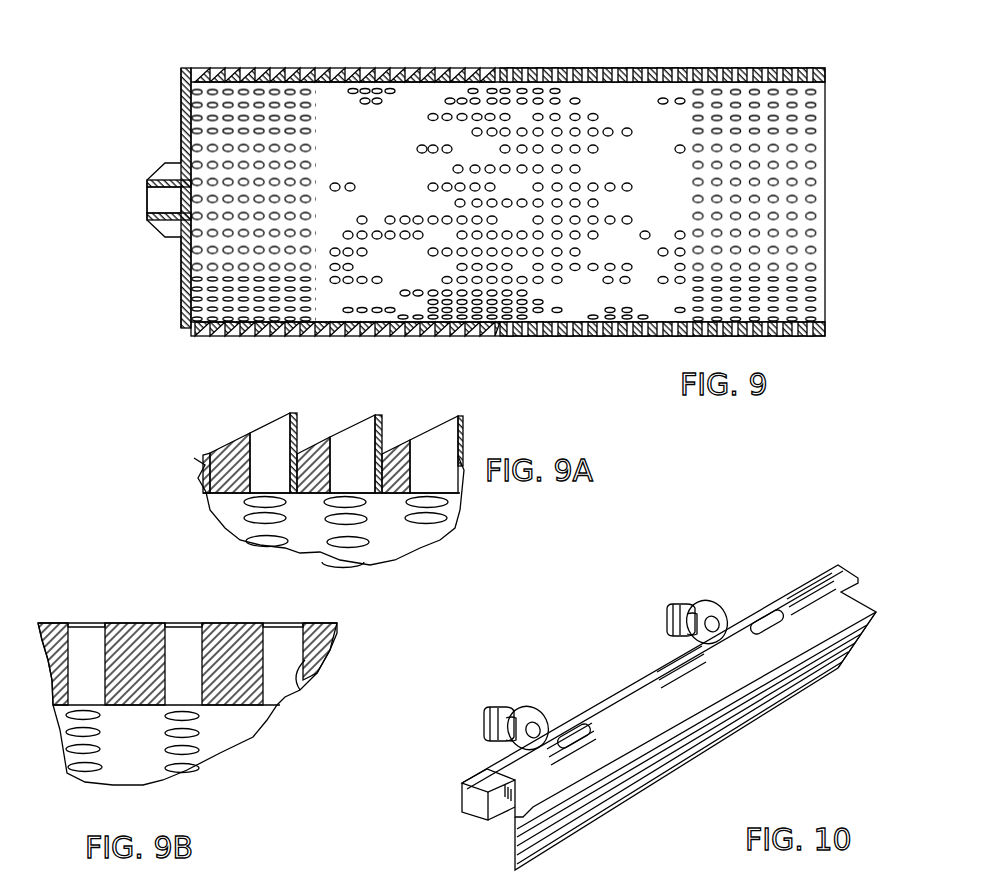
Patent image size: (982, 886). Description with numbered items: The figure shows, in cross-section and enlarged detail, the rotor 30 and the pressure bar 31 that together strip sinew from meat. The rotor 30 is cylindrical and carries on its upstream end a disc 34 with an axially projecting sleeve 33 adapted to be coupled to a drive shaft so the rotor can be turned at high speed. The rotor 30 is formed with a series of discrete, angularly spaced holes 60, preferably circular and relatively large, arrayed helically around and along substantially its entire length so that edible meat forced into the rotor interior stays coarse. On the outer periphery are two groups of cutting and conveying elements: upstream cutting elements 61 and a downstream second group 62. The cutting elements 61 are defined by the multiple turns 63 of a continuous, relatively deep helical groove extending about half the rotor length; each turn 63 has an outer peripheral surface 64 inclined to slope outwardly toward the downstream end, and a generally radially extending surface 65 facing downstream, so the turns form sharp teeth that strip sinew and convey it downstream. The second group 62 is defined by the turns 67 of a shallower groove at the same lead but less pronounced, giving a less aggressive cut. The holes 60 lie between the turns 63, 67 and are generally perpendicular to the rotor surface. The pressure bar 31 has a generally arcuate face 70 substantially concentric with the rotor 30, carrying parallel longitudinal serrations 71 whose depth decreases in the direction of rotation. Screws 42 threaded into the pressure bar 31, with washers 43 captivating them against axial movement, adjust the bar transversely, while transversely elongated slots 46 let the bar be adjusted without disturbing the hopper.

In FIG. 9, the rotor 30 is at (479, 209).
In FIG. 10, the pressure bar 31 is at (652, 699).
In FIG. 9, the sleeve 33 is at (150, 222).
In FIG. 9, the disc 34 is at (180, 143).
In FIG. 10, the screws 42 is at (482, 722).
In FIG. 10, the washers 43 is at (530, 708).
In FIG. 10, the slots 46 is at (586, 728).
In FIG. 9, the holes 60 is at (295, 84).
In FIG. 9A, the holes 60 is at (350, 496).
In FIG. 9B, the holes 60 is at (288, 660).
In FIG. 9, the cutting elements of the first group 61 is at (500, 62).
In FIG. 9A, the cutting elements of the first group 61 is at (316, 428).
In FIG. 9, the second group of cutting and conveying elements 62 is at (825, 62).
In FIG. 9B, the second group of cutting and conveying elements 62 is at (186, 682).
In FIG. 9, the turns 63 is at (355, 330).
In FIG. 9A, the turns 63 is at (326, 508).
In FIG. 9A, the outer peripheral surface 64 is at (273, 425).
In FIG. 9A, the radially extending surface 65 is at (382, 437).
In FIG. 9B, the turns 67 is at (130, 628).
In FIG. 10, the arcuate face 70 is at (828, 656).
In FIG. 10, the serrations 71 is at (619, 798).